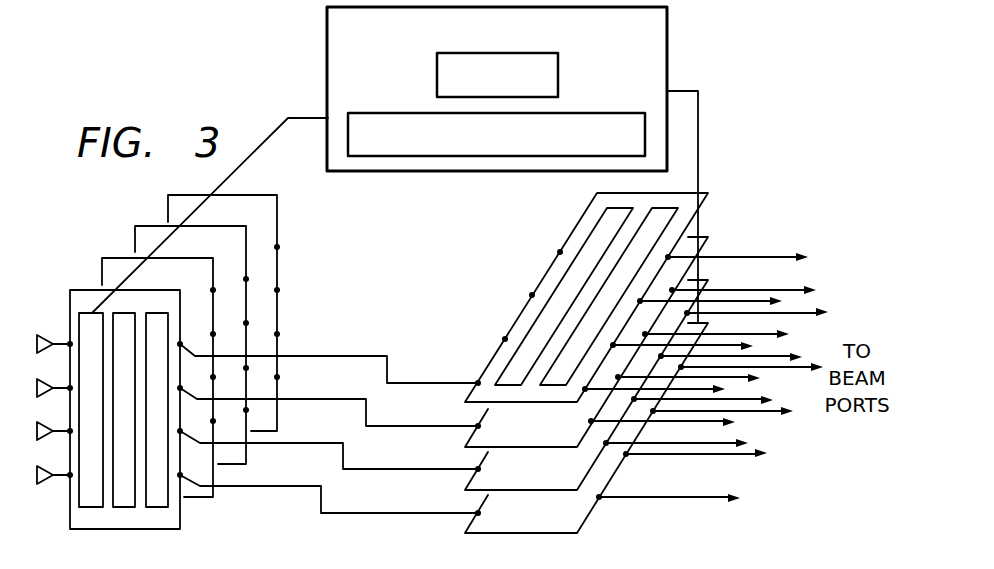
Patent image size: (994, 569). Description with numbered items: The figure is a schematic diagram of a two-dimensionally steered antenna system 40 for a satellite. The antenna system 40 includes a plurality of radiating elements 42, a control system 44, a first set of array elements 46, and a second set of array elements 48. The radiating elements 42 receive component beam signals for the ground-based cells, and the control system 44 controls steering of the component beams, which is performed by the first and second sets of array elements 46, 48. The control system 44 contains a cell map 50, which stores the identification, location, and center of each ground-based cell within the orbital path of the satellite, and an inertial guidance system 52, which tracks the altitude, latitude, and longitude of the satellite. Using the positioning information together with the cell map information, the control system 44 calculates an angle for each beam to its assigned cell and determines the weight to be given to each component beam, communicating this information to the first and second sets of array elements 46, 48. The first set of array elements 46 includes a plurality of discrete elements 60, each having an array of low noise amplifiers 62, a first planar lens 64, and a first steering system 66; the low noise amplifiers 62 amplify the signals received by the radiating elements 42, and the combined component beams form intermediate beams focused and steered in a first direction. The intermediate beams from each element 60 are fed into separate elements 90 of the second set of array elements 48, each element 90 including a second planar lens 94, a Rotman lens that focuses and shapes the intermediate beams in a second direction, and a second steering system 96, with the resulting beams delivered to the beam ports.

The antenna system 40 is at (784, 122).
The radiating elements 42 is at (99, 429).
The control system 44 is at (667, 52).
The first set of array elements 46 is at (261, 349).
The second set of array elements 48 is at (635, 296).
The cell map 50 is at (437, 73).
The inertial guidance system 52 is at (600, 113).
The discrete element 60 is at (168, 208).
The low noise amplifiers 62 is at (91, 507).
The first planar lens 64 is at (124, 507).
The first steering system 66 is at (157, 507).
The element of the second array 90 is at (475, 441).
The second planar lens 94 is at (535, 322).
The second steering system 96 is at (600, 290).